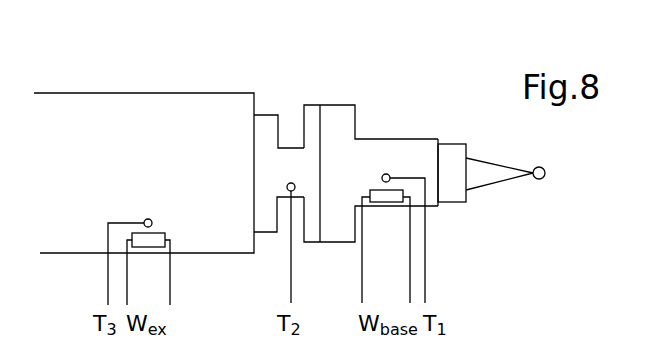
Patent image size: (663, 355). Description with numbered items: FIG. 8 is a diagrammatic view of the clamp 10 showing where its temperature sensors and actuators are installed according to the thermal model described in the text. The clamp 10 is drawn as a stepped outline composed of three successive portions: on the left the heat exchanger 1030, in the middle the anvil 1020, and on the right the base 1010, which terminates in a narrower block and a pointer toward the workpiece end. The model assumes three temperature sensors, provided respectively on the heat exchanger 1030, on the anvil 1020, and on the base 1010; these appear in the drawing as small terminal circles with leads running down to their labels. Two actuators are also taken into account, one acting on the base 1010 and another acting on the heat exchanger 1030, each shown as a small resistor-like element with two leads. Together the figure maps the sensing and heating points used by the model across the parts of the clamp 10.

The heat exchanger 1030 is at (120, 118).
The anvil 1020 is at (265, 138).
The base 1010 is at (372, 162).
The device 10 is at (455, 227).